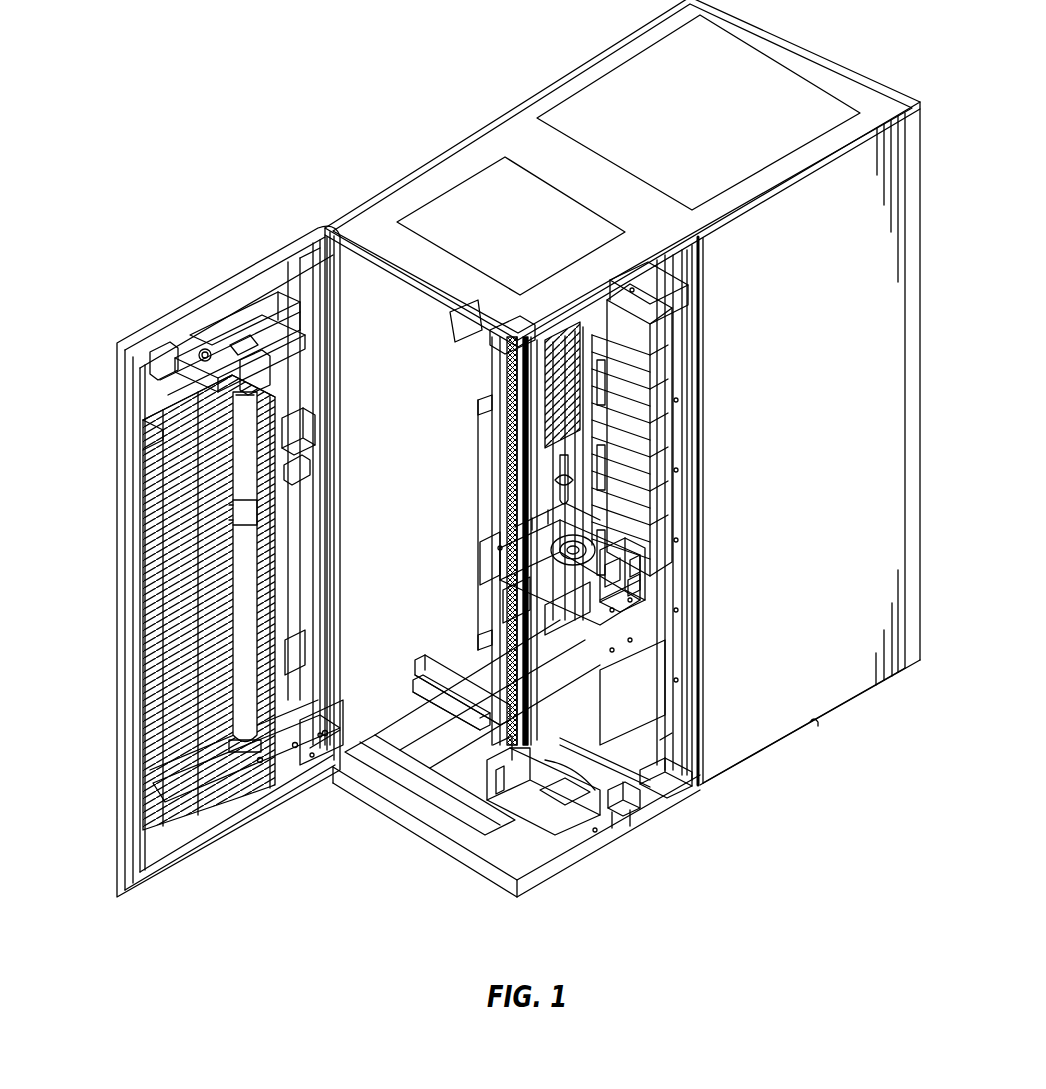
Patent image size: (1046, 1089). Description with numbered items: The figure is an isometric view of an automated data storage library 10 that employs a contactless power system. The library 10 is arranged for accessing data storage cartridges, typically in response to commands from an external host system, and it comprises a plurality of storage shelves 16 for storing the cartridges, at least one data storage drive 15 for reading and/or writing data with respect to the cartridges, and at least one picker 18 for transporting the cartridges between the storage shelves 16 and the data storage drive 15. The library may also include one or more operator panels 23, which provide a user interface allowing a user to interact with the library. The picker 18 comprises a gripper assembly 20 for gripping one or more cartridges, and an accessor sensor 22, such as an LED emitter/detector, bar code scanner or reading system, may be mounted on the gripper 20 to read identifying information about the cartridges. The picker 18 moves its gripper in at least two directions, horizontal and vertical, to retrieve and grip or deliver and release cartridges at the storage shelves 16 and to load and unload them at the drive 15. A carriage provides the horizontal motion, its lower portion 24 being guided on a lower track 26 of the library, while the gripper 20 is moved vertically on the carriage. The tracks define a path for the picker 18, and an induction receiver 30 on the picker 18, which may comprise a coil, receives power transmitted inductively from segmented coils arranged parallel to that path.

The automated data storage library 10 is at (170, 70).
The data storage drive 15 is at (665, 337).
The storage shelves 16 is at (503, 470).
The picker 18 is at (598, 836).
The gripper assembly 20 is at (643, 568).
The accessor sensor 22 is at (530, 597).
The operator panel 23 is at (300, 345).
The lower portion of the carriage 24 is at (630, 805).
The lower track 26 is at (365, 745).
The induction receiver 30 is at (663, 783).